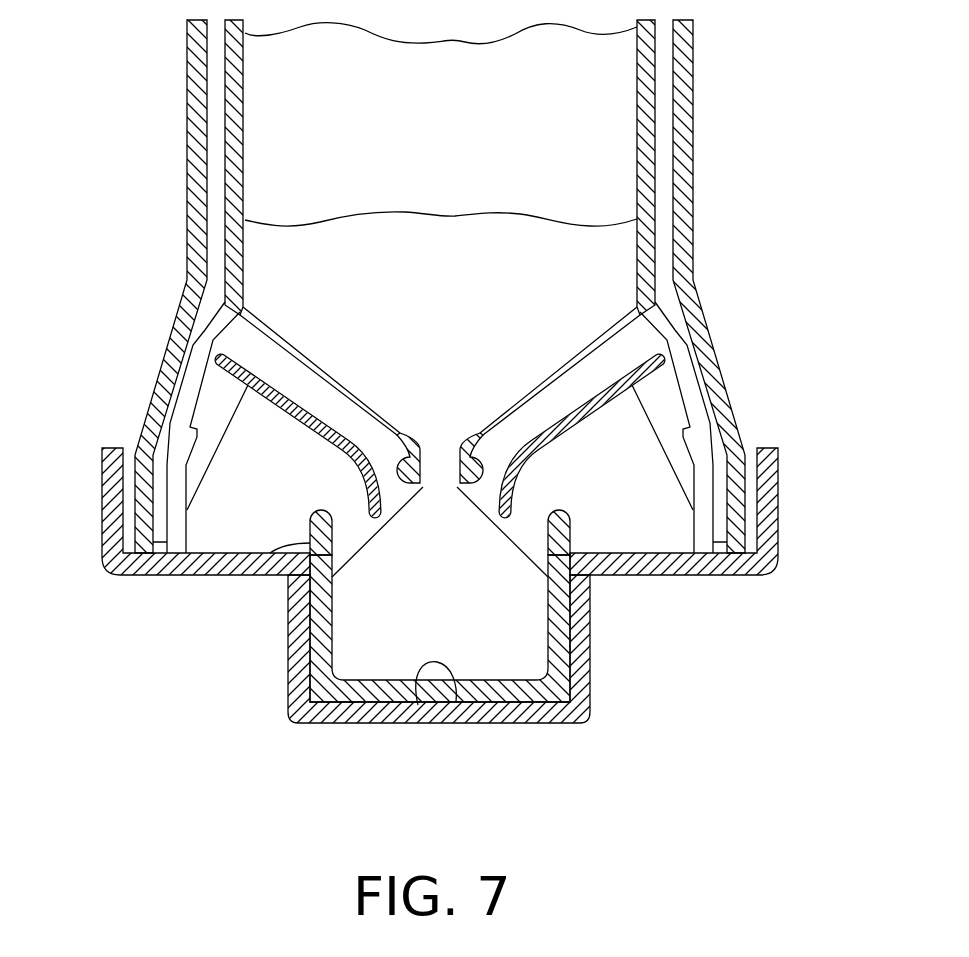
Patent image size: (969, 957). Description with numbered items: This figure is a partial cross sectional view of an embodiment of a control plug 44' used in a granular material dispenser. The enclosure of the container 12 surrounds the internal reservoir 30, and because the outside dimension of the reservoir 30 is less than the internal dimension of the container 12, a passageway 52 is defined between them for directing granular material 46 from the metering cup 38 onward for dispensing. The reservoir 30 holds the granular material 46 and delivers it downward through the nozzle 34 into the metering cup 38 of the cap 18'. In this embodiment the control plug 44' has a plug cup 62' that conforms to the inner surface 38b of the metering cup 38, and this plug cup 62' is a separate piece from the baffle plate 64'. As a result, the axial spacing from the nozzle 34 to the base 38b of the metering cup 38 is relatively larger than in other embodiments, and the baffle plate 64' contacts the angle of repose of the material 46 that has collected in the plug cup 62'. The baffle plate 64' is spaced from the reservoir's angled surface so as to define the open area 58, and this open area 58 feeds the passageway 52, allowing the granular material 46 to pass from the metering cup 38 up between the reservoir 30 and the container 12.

The container 12 is at (195, 142).
The reservoir 30 is at (643, 88).
The passageway 52 is at (218, 107).
The nozzle 34 is at (440, 424).
The open area 58 is at (262, 360).
The baffle plate 64' is at (669, 436).
The plug cup 62' is at (341, 474).
The cap 18' is at (500, 511).
The metering cup 38 is at (640, 625).
The inner surface of the metering cup 38b is at (418, 705).
The control plug 44' is at (221, 592).
The granular material 46 is at (590, 272).